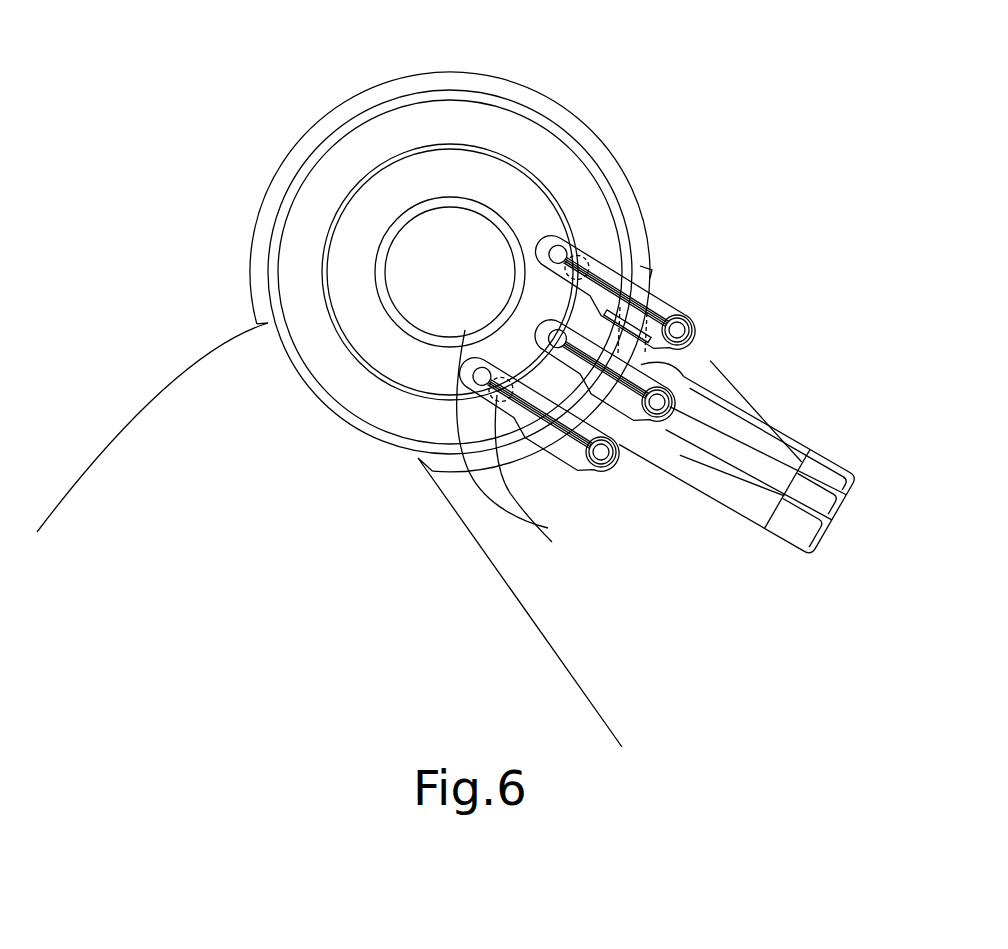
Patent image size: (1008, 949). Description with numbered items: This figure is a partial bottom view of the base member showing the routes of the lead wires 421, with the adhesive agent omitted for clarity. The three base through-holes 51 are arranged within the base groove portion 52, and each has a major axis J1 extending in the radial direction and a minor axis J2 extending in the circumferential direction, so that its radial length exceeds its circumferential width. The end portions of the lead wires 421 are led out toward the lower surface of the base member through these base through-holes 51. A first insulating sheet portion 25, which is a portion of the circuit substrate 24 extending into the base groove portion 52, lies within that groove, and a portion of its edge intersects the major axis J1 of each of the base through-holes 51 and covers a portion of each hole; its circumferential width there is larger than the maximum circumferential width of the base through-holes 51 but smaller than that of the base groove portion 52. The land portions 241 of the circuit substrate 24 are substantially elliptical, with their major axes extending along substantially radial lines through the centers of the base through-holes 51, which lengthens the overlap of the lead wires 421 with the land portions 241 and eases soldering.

The base through-holes 51 is at (622, 168).
The base groove portion 52 is at (522, 360).
The first insulating sheet portion 25 is at (663, 303).
The lead wires 421 is at (650, 272).
The land portions 241 is at (616, 452).
The circuit substrate 24 is at (735, 444).
The major axis J1 is at (553, 367).
The minor axis J2 is at (542, 327).